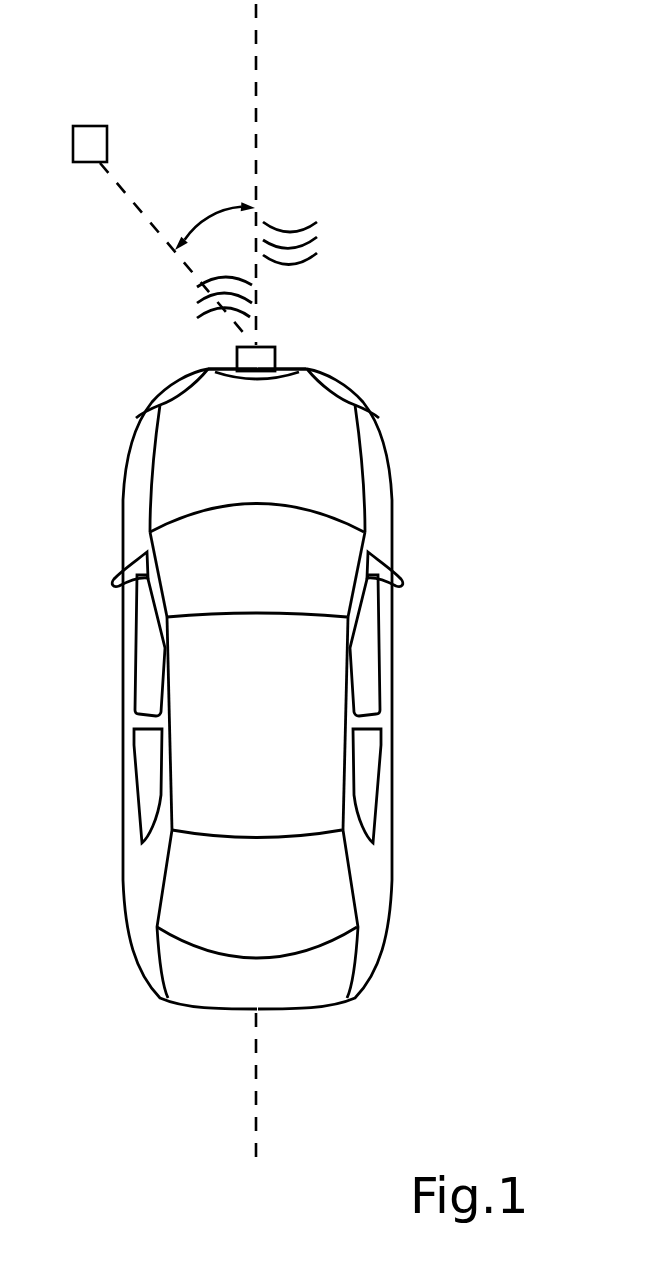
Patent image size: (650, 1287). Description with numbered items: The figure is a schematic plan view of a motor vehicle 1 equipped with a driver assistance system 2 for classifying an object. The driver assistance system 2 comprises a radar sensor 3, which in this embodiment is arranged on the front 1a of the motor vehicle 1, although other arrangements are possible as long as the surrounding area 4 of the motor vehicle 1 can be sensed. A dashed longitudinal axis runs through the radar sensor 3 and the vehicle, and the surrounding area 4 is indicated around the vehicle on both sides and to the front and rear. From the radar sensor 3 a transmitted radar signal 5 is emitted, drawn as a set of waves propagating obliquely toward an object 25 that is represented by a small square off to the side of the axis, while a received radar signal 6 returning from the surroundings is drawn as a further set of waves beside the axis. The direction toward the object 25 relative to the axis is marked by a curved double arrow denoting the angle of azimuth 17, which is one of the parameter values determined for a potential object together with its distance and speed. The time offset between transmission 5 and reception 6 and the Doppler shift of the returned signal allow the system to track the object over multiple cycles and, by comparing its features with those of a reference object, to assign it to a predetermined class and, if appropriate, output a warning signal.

The motor vehicle 1 is at (415, 653).
The front 1a is at (208, 369).
The driver assistance system 2 is at (305, 360).
The radar sensor 3 is at (266, 354).
The surrounding area 4 is at (292, 584).
The transmitted radar signal 5 is at (174, 319).
The received radar signal 6 is at (348, 228).
The angle of azimuth 17 is at (207, 215).
The object 25 is at (94, 138).